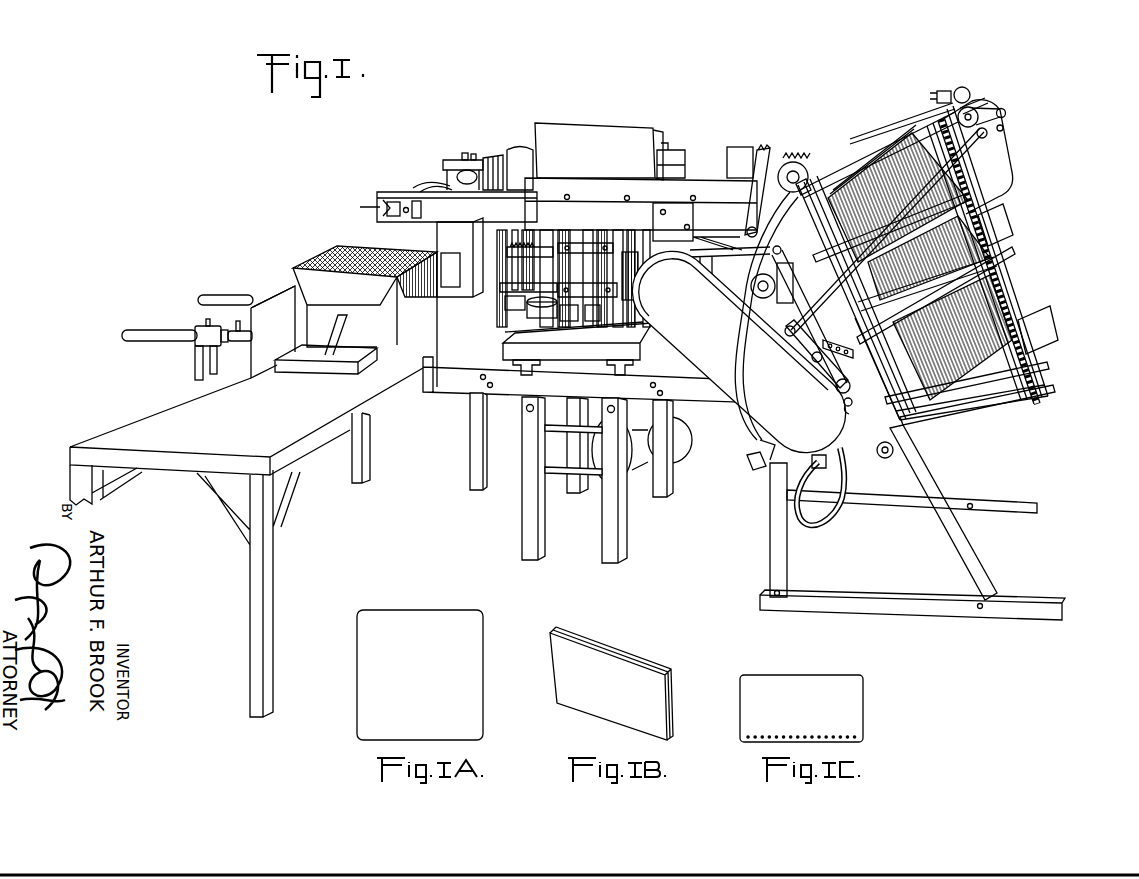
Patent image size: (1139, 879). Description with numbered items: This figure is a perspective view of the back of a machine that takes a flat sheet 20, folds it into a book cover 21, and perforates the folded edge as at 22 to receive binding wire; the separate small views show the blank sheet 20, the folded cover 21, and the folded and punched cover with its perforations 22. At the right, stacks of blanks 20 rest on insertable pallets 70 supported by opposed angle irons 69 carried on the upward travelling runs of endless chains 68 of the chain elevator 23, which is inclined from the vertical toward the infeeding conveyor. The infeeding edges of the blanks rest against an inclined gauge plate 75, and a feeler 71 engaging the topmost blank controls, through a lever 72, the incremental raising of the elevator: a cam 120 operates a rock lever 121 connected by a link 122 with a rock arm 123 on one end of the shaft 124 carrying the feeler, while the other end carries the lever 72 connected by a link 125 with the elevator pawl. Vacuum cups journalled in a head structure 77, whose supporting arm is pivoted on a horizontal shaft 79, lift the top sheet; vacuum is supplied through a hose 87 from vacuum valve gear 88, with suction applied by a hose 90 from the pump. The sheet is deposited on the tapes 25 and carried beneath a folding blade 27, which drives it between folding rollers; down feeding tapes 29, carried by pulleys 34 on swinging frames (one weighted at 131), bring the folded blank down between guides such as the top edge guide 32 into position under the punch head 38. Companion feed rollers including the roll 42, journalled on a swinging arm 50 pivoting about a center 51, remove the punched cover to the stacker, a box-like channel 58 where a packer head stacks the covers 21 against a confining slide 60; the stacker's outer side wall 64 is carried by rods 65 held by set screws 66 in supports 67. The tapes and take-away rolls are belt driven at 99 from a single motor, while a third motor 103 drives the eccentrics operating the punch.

In FIG. 1, the sheet 20 is at (570, 135).
In FIG. 1A, the sheet 20 is at (363, 650).
In FIG. 1, the book cover 21 is at (327, 252).
In FIG. 1B, the book cover 21 is at (667, 704).
In FIG. 1C, the book cover 21 is at (863, 701).
In FIG. 1C, the perforations 22 is at (840, 737).
In FIG. 1, the chain elevator 23 is at (1015, 271).
In FIG. 1, the tapes 25 is at (455, 182).
In FIG. 1, the folding blade 27 is at (680, 160).
In FIG. 1, the down feeding tapes 29 is at (587, 218).
In FIG. 1, the top edge guide 32 is at (530, 262).
In FIG. 1, the pulleys 34 is at (570, 321).
In FIG. 1, the punch head 38 is at (570, 360).
In FIG. 1, the feed roller 42 is at (543, 316).
In FIG. 1, the swinging arm 50 is at (520, 318).
In FIG. 1, the center 51 is at (513, 270).
In FIG. 1, the box-like channel 58 is at (277, 290).
In FIG. 1, the confining slide 60 is at (312, 358).
In FIG. 1, the outer side wall 64 is at (265, 370).
In FIG. 1, the rods 65 is at (220, 296).
In FIG. 1, the set screws 66 is at (206, 322).
In FIG. 1, the supports 67 is at (197, 365).
In FIG. 1, the endless chains 68 is at (1050, 400).
In FIG. 1, the angle irons 69 is at (966, 196).
In FIG. 1, the pallets 70 is at (1005, 222).
In FIG. 1, the feeler 71 is at (907, 115).
In FIG. 1, the lever 72 is at (990, 97).
In FIG. 1, the inclined gauge plate 75 is at (868, 388).
In FIG. 1, the head structure 77 is at (757, 163).
In FIG. 1, the horizontal shaft 79 is at (750, 293).
In FIG. 1, the hose 87 is at (737, 415).
In FIG. 1, the vacuum valve gear 88 is at (750, 463).
In FIG. 1, the hose 90 is at (843, 483).
In FIG. 1, the belt connection 99 is at (795, 150).
In FIG. 1, the third motor 103 is at (642, 453).
In FIG. 1, the cam 120 is at (845, 408).
In FIG. 1, the rock lever 121 is at (803, 344).
In FIG. 1, the link 122 is at (967, 155).
In FIG. 1, the rock arm 123 is at (988, 120).
In FIG. 1, the shaft 124 is at (975, 106).
In FIG. 1, the link 125 is at (1003, 128).
In FIG. 1, the weight 131 is at (587, 295).